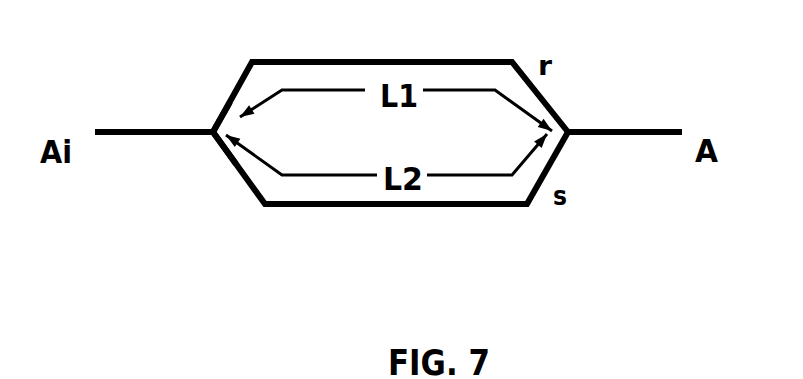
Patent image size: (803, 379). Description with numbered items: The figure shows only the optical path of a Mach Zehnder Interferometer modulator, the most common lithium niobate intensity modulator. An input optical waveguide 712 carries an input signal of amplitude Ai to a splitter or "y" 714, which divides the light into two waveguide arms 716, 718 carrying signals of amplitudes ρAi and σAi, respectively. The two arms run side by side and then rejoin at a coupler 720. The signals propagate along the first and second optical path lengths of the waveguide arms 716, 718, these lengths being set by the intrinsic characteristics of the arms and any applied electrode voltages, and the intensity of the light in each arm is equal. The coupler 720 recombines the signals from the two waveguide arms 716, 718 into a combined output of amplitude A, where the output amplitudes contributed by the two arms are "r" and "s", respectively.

The optical waveguide 712 is at (152, 130).
The splitter 714 is at (211, 132).
The waveguide arm 716 is at (427, 60).
The waveguide arm 718 is at (370, 206).
The coupler 720 is at (569, 131).